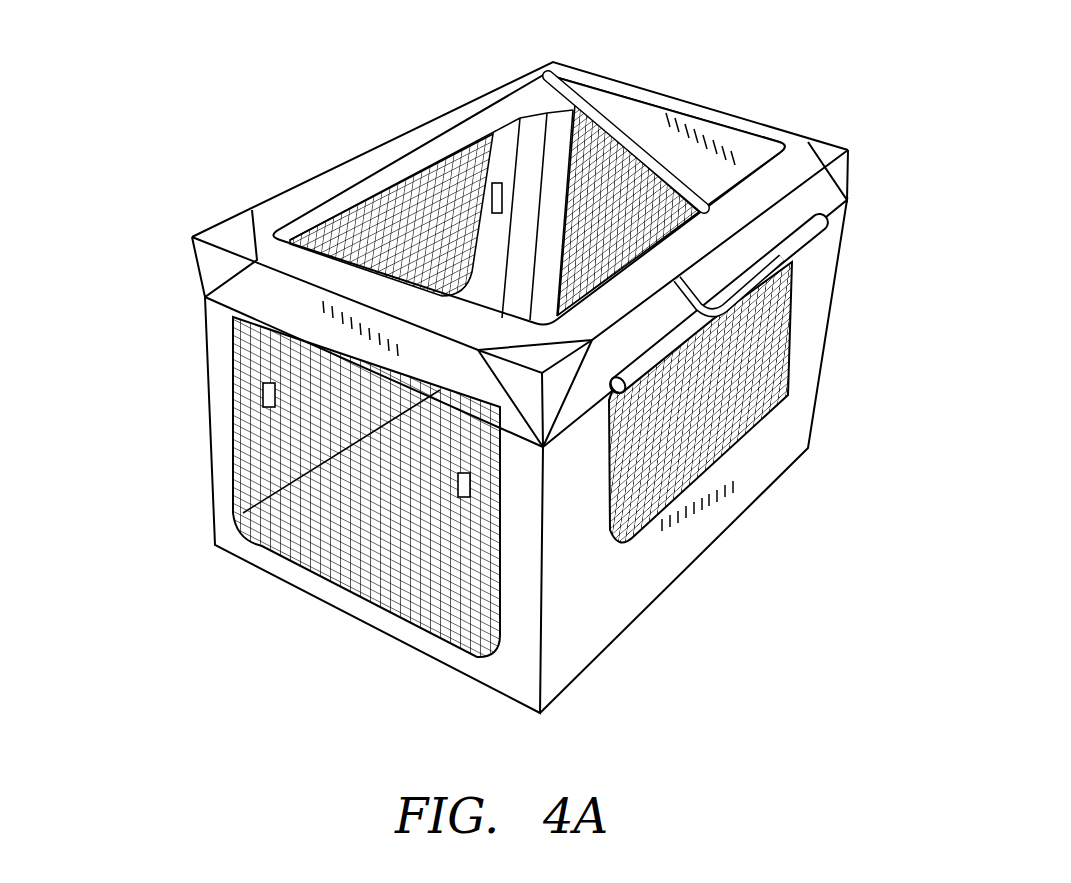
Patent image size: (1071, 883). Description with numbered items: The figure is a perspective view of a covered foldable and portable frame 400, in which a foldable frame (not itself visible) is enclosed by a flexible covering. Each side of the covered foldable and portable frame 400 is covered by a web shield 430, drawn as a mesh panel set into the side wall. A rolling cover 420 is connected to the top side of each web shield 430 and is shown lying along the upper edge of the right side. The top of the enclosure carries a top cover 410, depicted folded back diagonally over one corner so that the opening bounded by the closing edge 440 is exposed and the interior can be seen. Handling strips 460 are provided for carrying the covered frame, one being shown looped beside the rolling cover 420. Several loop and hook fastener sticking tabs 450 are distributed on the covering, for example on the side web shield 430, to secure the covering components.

The covered foldable and portable frame 400 is at (148, 64).
The top cover 410 is at (727, 137).
The rolling cover 420 is at (828, 230).
The web shield 430 is at (233, 418).
The closing edge 440 is at (413, 150).
The loop & hook fastener sticking tab 450 is at (503, 535).
The handling strip 460 is at (797, 277).